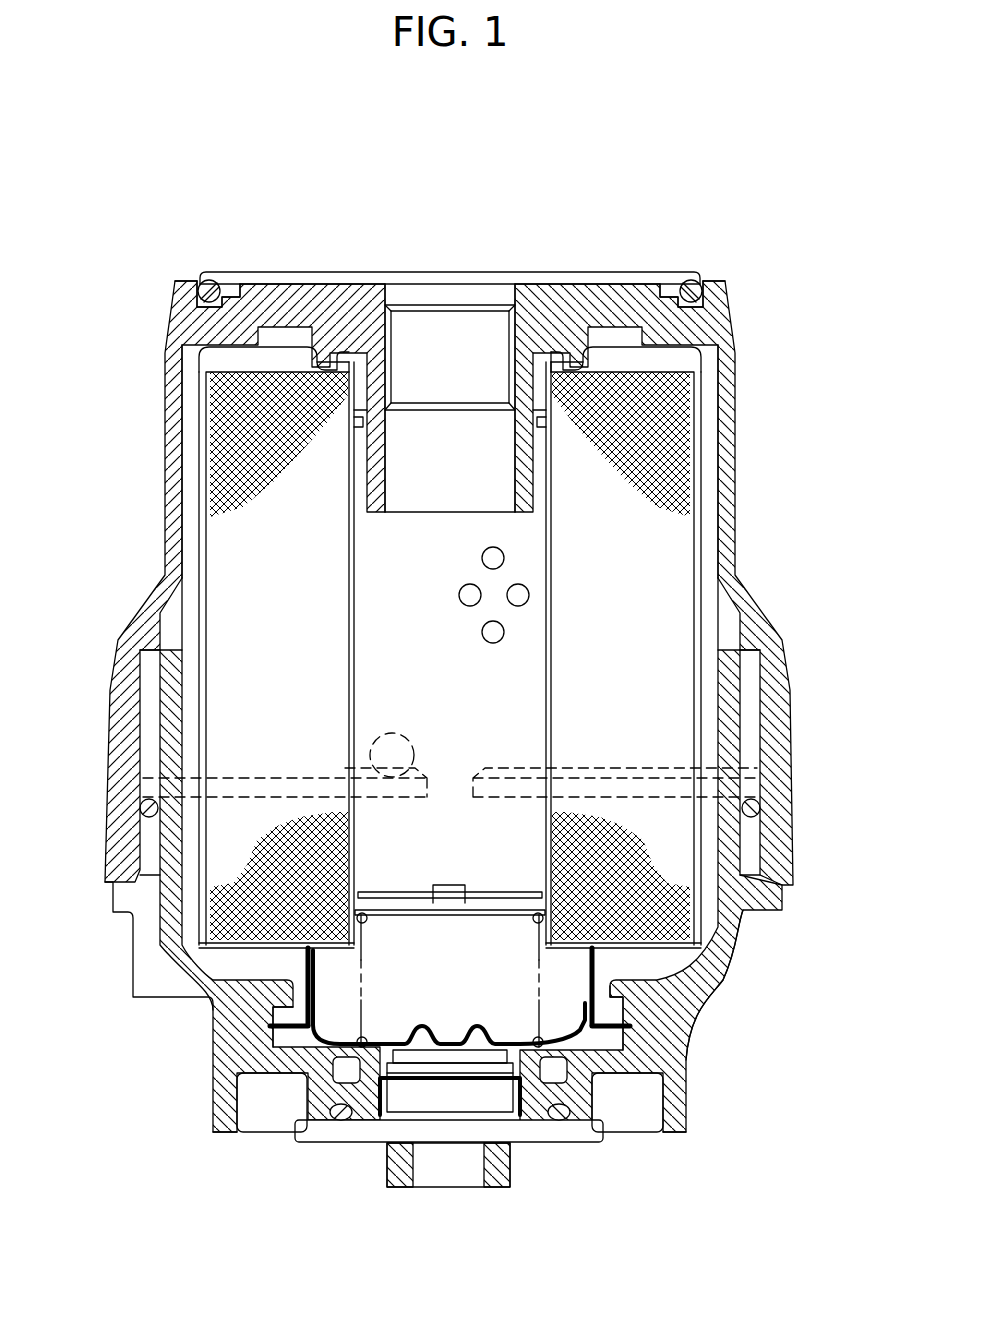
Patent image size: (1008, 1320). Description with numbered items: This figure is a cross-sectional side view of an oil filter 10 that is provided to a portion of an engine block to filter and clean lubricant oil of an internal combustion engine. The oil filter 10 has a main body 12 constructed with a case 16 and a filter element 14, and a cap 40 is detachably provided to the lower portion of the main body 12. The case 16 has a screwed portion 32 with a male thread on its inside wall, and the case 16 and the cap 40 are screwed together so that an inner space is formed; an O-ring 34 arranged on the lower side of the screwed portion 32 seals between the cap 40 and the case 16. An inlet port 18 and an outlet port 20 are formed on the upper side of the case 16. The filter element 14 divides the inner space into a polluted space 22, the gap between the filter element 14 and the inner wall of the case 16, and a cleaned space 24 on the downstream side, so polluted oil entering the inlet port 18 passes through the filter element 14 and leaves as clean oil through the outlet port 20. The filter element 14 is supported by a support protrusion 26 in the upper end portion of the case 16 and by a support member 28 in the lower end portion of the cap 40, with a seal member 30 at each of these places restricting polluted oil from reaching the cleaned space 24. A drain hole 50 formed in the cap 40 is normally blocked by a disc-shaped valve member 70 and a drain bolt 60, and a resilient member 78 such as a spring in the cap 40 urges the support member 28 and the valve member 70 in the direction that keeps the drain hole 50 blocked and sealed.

The oil filter 10 is at (302, 157).
The main body 12 is at (748, 268).
The filter element 14 is at (267, 523).
The case 16 is at (717, 375).
The inlet port 18 is at (282, 358).
The outlet port 20 is at (384, 461).
The polluted space 22 is at (707, 547).
The cleaned space 24 is at (410, 633).
The support protrusion 26 is at (570, 360).
The support member 28 is at (617, 1005).
The seal member 30 is at (332, 363).
The screwed portion 32 is at (150, 667).
The O-ring 34 is at (142, 806).
The cap 40 is at (745, 965).
The drain hole 50 is at (402, 1100).
The drain bolt 60 is at (487, 1100).
The valve member 70 is at (303, 1043).
The resilient member 78 is at (545, 1030).